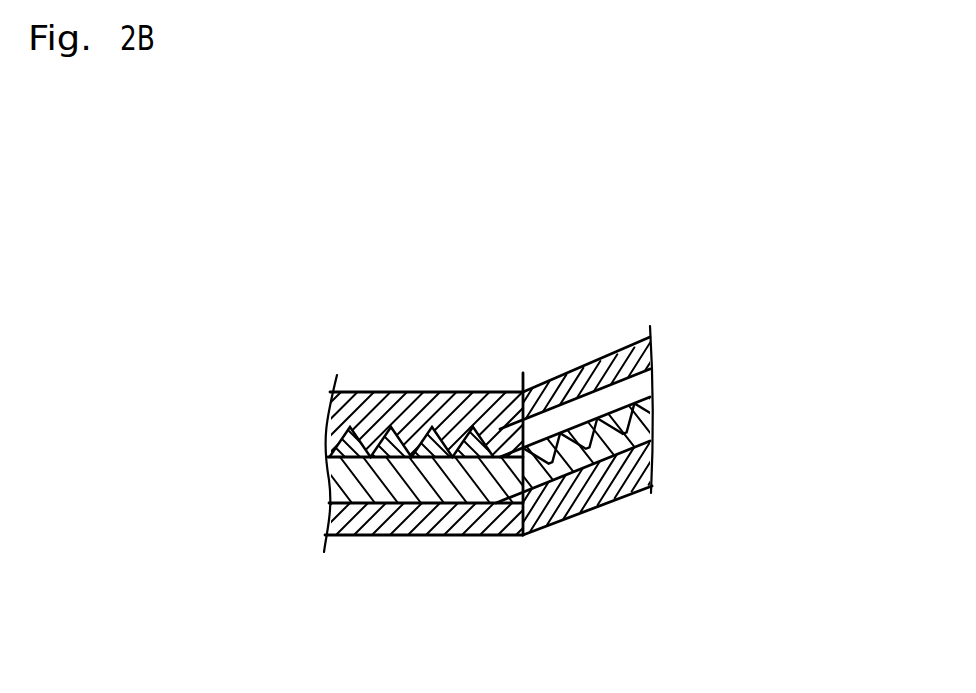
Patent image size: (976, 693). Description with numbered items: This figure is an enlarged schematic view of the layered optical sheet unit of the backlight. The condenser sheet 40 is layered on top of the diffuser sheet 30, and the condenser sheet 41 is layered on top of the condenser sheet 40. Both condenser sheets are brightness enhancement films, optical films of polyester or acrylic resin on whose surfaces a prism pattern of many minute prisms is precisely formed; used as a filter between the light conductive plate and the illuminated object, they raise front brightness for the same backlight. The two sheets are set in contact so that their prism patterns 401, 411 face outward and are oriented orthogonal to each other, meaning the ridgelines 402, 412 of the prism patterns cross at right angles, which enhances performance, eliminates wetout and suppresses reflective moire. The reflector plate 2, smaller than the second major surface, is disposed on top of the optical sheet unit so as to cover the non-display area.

The diffuser sheet 30 is at (583, 343).
The condenser sheet 40 is at (645, 352).
The prism pattern 401 is at (412, 440).
The ridgeline 402 is at (368, 462).
The condenser sheet 41 is at (655, 413).
The prism pattern 411 is at (613, 468).
The ridgeline 412 is at (561, 490).
The reflector plate 2 is at (655, 458).